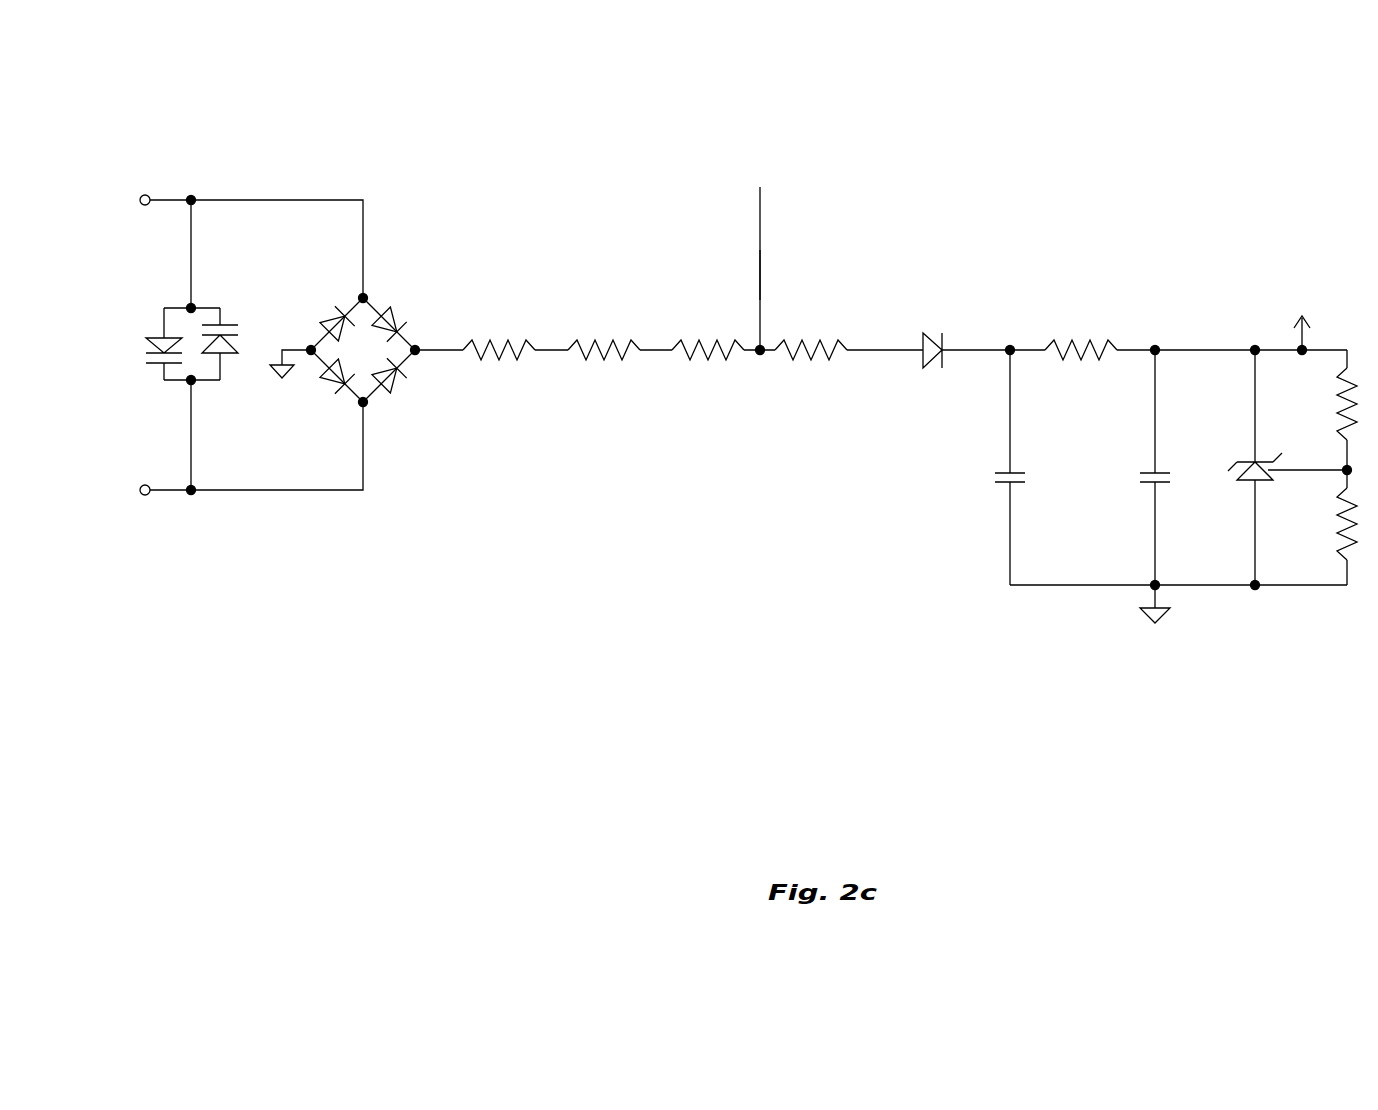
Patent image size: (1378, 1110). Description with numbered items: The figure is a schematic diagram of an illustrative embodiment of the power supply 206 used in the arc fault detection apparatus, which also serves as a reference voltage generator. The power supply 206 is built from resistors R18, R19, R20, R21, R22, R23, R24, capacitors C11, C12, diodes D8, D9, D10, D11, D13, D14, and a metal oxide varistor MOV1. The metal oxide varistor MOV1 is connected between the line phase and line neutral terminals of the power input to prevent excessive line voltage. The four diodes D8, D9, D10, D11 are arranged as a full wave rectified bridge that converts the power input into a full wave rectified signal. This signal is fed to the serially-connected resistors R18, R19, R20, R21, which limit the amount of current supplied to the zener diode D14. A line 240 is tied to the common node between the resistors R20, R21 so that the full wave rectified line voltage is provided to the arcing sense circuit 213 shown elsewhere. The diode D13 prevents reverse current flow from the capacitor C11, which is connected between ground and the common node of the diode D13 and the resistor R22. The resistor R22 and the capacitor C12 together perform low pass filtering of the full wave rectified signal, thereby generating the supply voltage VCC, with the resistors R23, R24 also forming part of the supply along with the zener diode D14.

The power supply 206 is at (516, 96).
The arcing sense circuit 213 is at (757, 224).
The line 240 is at (760, 270).
The metal oxide varistor MOV1 is at (177, 361).
The diode D8 is at (323, 317).
The diode D9 is at (403, 317).
The diode D10 is at (411, 388).
The diode D11 is at (320, 388).
The resistor R18 is at (499, 337).
The resistor R19 is at (604, 337).
The resistor R20 is at (708, 337).
The resistor R21 is at (811, 337).
The resistor R22 is at (1081, 340).
The resistor R23 is at (1323, 404).
The resistor R24 is at (1324, 524).
The diode D13 is at (933, 339).
The zener diode D14 is at (1270, 467).
The capacitor C11 is at (1034, 467).
The capacitor C12 is at (1180, 467).